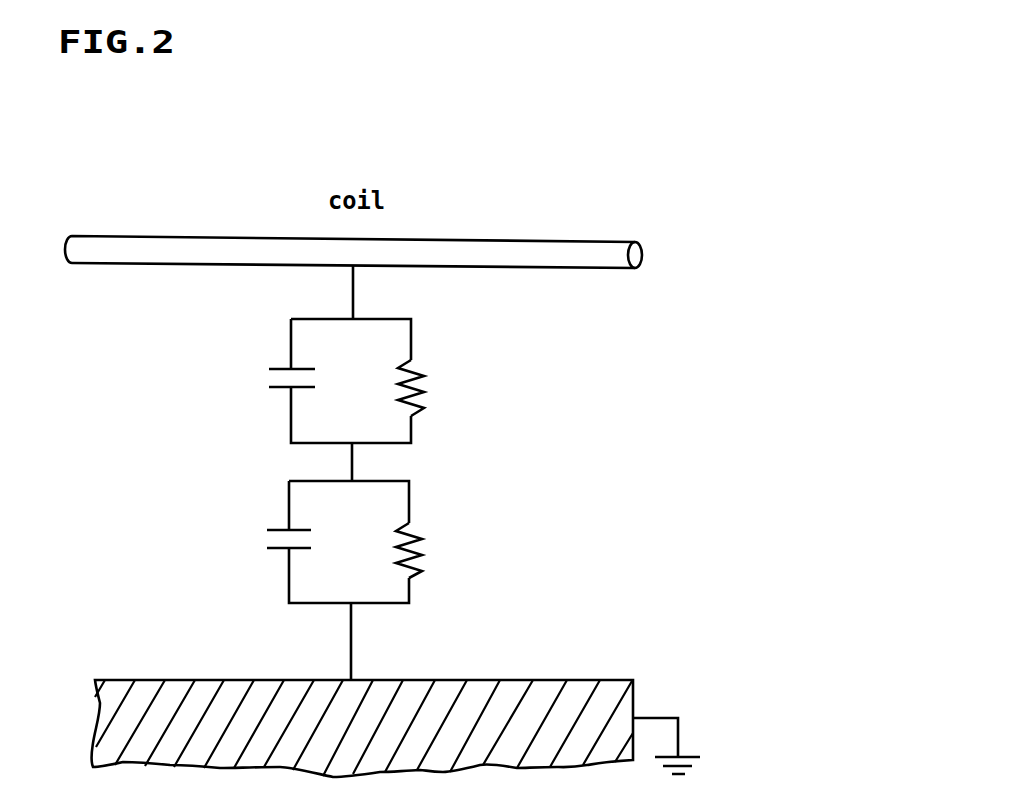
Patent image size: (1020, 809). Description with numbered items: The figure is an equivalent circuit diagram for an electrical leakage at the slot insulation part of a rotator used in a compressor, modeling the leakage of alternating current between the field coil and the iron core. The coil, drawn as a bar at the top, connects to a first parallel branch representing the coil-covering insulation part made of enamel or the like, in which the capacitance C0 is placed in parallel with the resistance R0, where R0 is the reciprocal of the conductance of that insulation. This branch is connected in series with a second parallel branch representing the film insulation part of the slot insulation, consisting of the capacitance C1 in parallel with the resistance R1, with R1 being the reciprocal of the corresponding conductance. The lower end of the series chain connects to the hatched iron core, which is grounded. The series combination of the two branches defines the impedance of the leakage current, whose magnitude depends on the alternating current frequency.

The capacitance of the coil-covering insulation part C0 is at (263, 387).
The resistance of the coil-covering insulation part R0 is at (626, 395).
The capacitance of the film insulation part C1 is at (261, 542).
The resistance of the film insulation part R1 is at (634, 550).